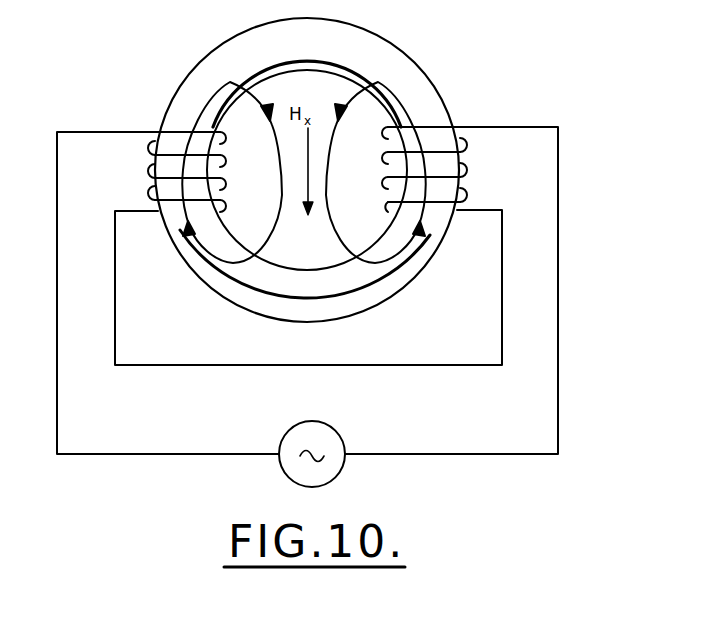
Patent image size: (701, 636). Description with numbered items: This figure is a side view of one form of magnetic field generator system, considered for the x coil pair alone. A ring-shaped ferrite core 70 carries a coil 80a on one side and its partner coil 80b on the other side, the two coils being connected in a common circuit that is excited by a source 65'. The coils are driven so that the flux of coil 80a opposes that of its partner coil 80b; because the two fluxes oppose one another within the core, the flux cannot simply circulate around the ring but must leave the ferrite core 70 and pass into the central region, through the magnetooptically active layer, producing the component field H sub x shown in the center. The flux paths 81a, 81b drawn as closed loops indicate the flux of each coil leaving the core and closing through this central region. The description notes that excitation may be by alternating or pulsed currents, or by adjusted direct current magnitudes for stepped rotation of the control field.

The ferrite core 70 is at (402, 276).
The coil 80a is at (146, 132).
The partner coil 80b is at (460, 127).
The magnetic flux path of coil 80a 81a is at (203, 254).
The magnetic flux path of coil 80b 81b is at (402, 90).
The AC drive source 65' is at (335, 446).